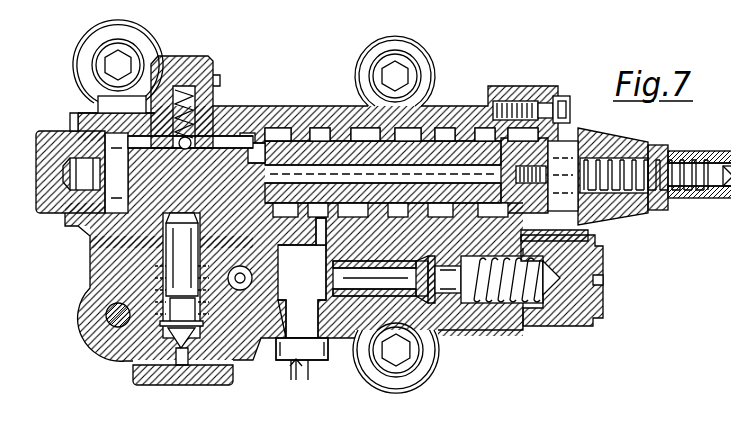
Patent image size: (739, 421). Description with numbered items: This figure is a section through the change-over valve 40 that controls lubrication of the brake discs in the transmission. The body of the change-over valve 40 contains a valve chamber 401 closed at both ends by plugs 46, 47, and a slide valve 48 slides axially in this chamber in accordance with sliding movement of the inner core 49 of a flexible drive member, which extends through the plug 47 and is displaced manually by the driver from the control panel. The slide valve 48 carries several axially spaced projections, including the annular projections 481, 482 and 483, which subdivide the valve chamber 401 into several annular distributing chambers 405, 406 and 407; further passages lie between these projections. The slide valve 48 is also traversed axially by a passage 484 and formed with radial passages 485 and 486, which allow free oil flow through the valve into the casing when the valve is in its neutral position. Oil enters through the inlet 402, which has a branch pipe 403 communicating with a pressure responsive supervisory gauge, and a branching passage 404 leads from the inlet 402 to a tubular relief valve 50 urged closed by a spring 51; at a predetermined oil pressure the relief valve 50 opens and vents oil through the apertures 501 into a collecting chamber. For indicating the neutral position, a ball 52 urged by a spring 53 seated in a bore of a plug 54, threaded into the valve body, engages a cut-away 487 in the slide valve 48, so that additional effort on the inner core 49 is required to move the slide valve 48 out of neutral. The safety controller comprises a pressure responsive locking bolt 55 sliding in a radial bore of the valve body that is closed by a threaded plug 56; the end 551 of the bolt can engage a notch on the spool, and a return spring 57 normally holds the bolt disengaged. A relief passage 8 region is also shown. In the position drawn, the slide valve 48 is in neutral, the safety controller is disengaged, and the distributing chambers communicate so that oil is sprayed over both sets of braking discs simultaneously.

The relief valve / passage 8 is at (548, 90).
The change-over valve 40 is at (505, 120).
The valve chamber 401 is at (238, 125).
The inlet 402 is at (270, 330).
The branch pipe 403 is at (284, 352).
The branching passage 404 is at (328, 292).
The distributing chamber 405 is at (268, 120).
The distributing chamber 406 is at (355, 120).
The distributing chamber 407 is at (438, 120).
The plug 46 is at (64, 124).
The plug 47 is at (636, 195).
The slide valve 48 is at (316, 133).
The annular projection 481 is at (308, 120).
The annular projection 482 is at (405, 125).
The annular projection 483 is at (478, 170).
The axial passage 484 is at (465, 165).
The radial passage 485 is at (250, 134).
The radial passage 486 is at (565, 205).
The cut-away 487 is at (135, 128).
The inner core 49 is at (550, 170).
The tubular relief valve 50 is at (433, 300).
The apertures 501 is at (466, 300).
The spring 51 is at (555, 318).
The ball 52 is at (168, 132).
The spring 53 is at (180, 100).
The plug 54 is at (157, 50).
The pressure responsive locking bolt 55 is at (168, 243).
The end of the bolt 551 is at (172, 213).
The threaded plug 56 is at (155, 374).
The return spring 57 is at (150, 286).